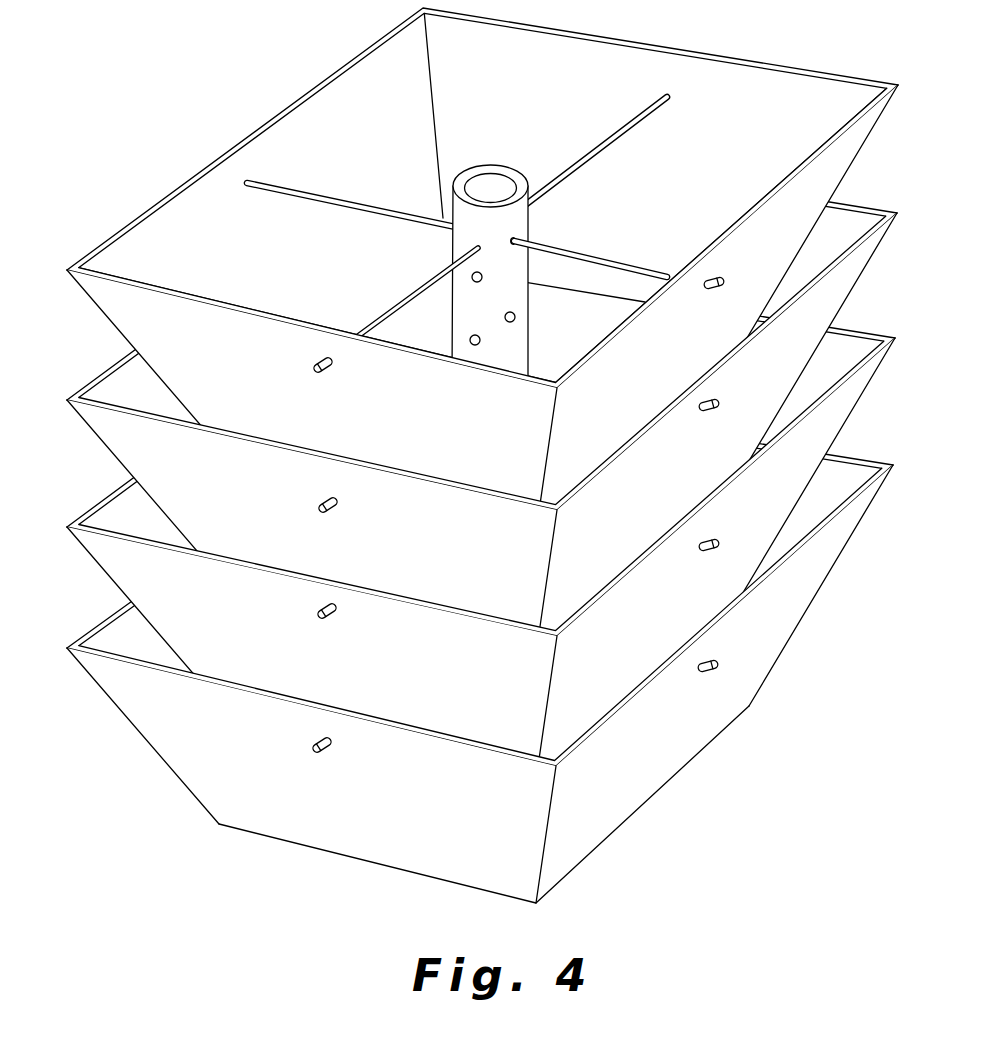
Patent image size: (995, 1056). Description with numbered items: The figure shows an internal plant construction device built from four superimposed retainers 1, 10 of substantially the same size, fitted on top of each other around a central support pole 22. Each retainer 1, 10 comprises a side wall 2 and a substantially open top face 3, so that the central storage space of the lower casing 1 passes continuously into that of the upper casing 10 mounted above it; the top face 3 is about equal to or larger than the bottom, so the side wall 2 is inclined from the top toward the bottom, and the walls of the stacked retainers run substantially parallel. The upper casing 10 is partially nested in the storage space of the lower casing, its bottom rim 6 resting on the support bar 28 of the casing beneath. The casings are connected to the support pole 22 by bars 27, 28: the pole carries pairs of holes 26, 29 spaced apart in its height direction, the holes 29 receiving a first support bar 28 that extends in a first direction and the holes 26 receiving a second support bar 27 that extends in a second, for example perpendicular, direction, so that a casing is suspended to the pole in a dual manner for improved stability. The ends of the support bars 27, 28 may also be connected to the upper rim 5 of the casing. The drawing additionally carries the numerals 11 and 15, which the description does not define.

The retainer 1 is at (299, 862).
The side wall 2 is at (685, 734).
The top face 3 is at (292, 105).
The upper rim 5 is at (788, 562).
The bottom rim 6 is at (621, 826).
The retainer 10 is at (99, 584).
The hole 11 is at (517, 318).
The rim 15 is at (107, 497).
The support pole 22 is at (510, 165).
The hole 26 is at (482, 250).
The second support bar 27 is at (611, 150).
The first support bar 28 is at (598, 256).
The hole 29 is at (532, 221).